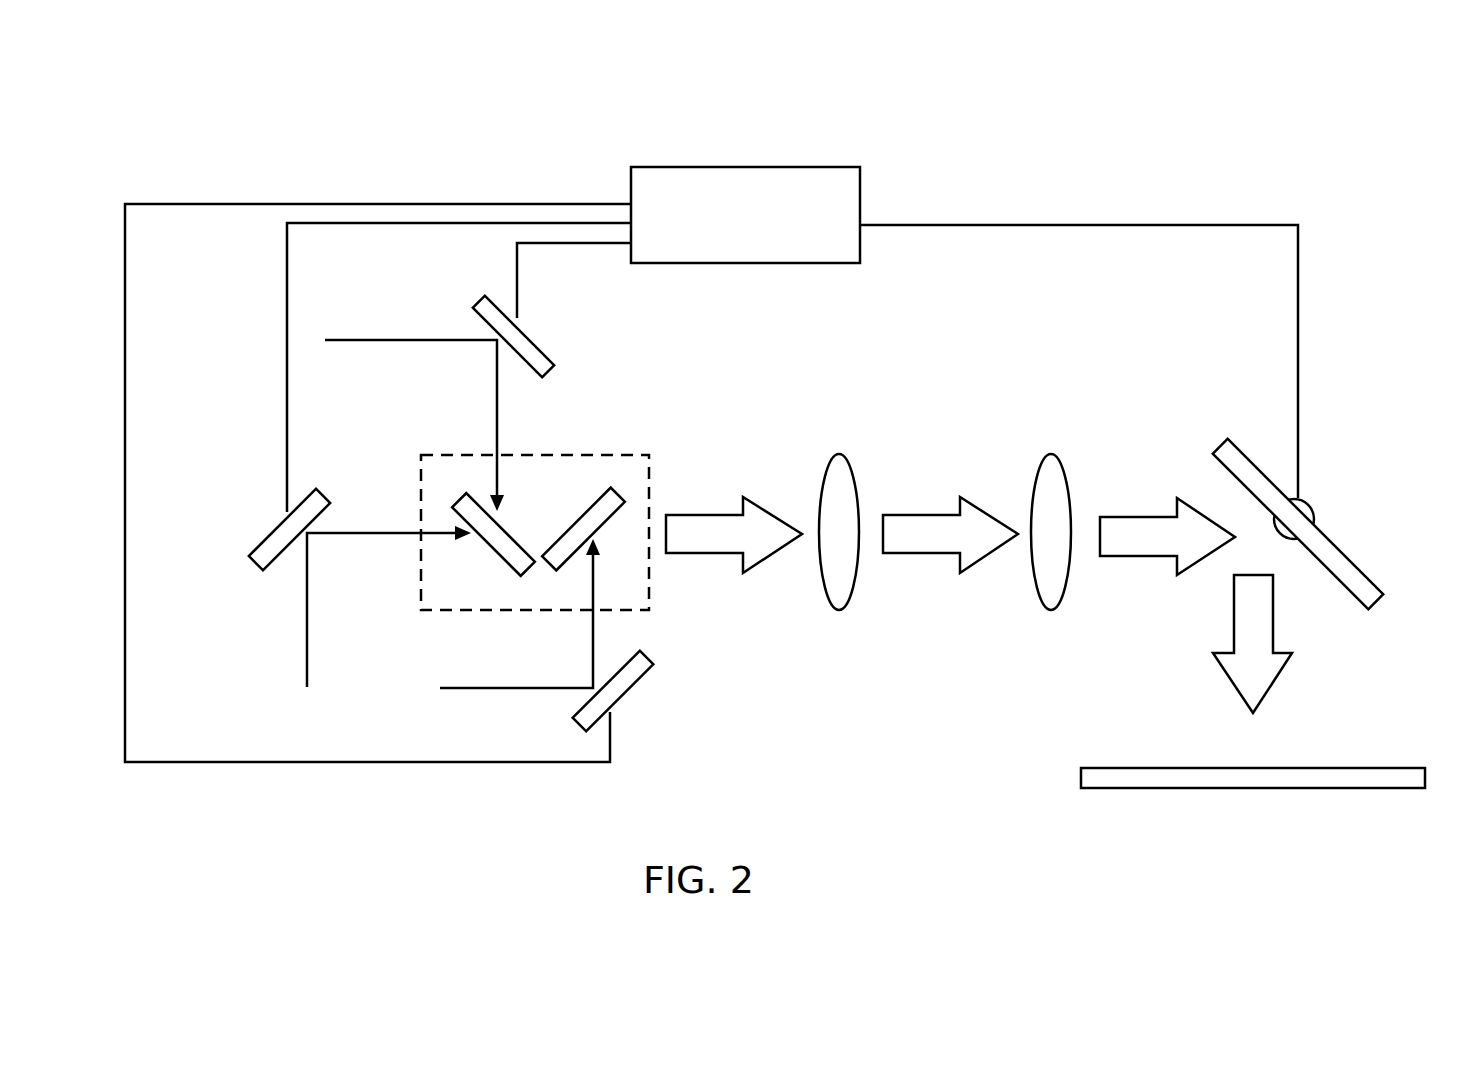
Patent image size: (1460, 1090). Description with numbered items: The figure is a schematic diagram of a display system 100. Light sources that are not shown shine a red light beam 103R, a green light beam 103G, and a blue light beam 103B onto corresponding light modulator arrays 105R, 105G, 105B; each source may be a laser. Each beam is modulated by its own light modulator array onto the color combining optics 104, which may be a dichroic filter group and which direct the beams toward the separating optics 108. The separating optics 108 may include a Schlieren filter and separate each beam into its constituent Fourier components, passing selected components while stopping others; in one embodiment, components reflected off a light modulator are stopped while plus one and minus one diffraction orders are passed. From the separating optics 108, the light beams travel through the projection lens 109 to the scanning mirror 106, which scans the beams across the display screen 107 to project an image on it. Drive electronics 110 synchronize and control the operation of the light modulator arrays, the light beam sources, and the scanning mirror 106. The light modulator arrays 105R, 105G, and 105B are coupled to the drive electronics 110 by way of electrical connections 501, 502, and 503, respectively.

The display system 100 is at (248, 115).
The drive electronics 110 is at (798, 167).
The electrical connection 501 is at (535, 243).
The electrical connection 502 is at (546, 223).
The electrical connection 503 is at (565, 204).
The light modulator array 105R is at (483, 298).
The light modulator array 105G is at (255, 568).
The light modulator array 105B is at (653, 657).
The red light beam 103R is at (497, 403).
The green light beam 103G is at (307, 622).
The blue light beam 103B is at (503, 688).
The color combining optics 104 is at (421, 473).
The separating optics 108 is at (847, 465).
The projection lens 109 is at (1060, 465).
The scanning mirror 106 is at (1380, 598).
The display screen 107 is at (1272, 767).